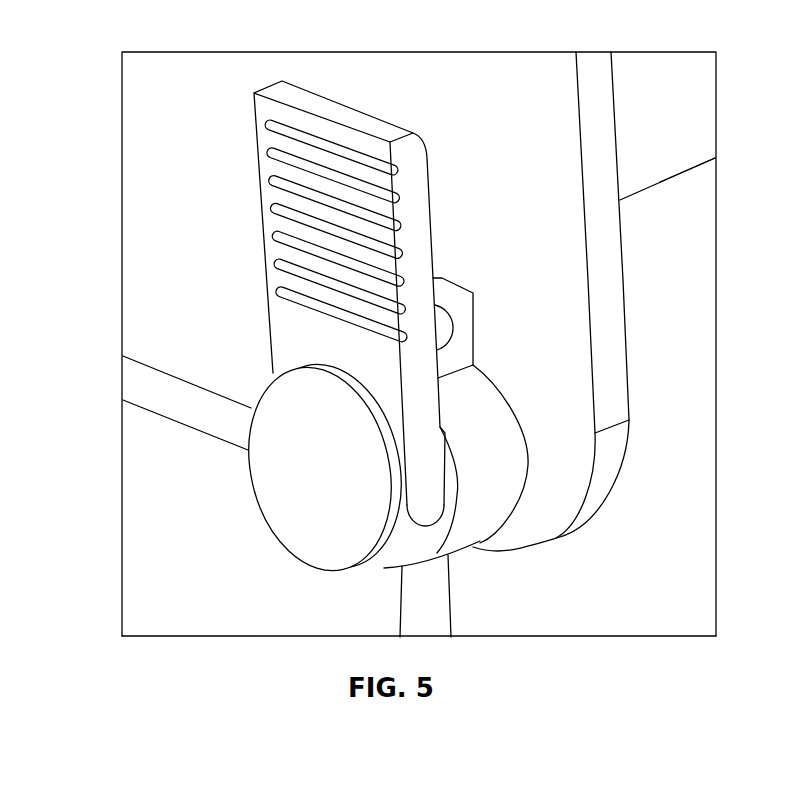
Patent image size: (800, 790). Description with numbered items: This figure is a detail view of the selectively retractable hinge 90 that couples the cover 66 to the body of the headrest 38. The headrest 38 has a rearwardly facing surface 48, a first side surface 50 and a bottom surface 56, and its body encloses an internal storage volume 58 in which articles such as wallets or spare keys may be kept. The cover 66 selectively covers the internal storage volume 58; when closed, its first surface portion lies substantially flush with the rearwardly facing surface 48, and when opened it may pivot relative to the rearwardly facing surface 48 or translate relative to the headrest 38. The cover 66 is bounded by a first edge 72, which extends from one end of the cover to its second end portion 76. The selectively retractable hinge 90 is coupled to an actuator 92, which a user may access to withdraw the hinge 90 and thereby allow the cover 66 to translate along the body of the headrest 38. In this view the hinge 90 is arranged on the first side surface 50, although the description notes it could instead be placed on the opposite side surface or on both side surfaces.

The headrest 38 is at (413, 370).
The rearwardly facing surface 48 is at (605, 293).
The first side surface 50 is at (150, 218).
The bottom surface 56 is at (200, 433).
The internal storage volume 58 is at (693, 116).
The cover 66 is at (719, 618).
The first edge 72 is at (427, 622).
The second end portion 76 is at (698, 257).
The selectively retractable hinge 90 is at (290, 552).
The actuator 92 is at (287, 322).